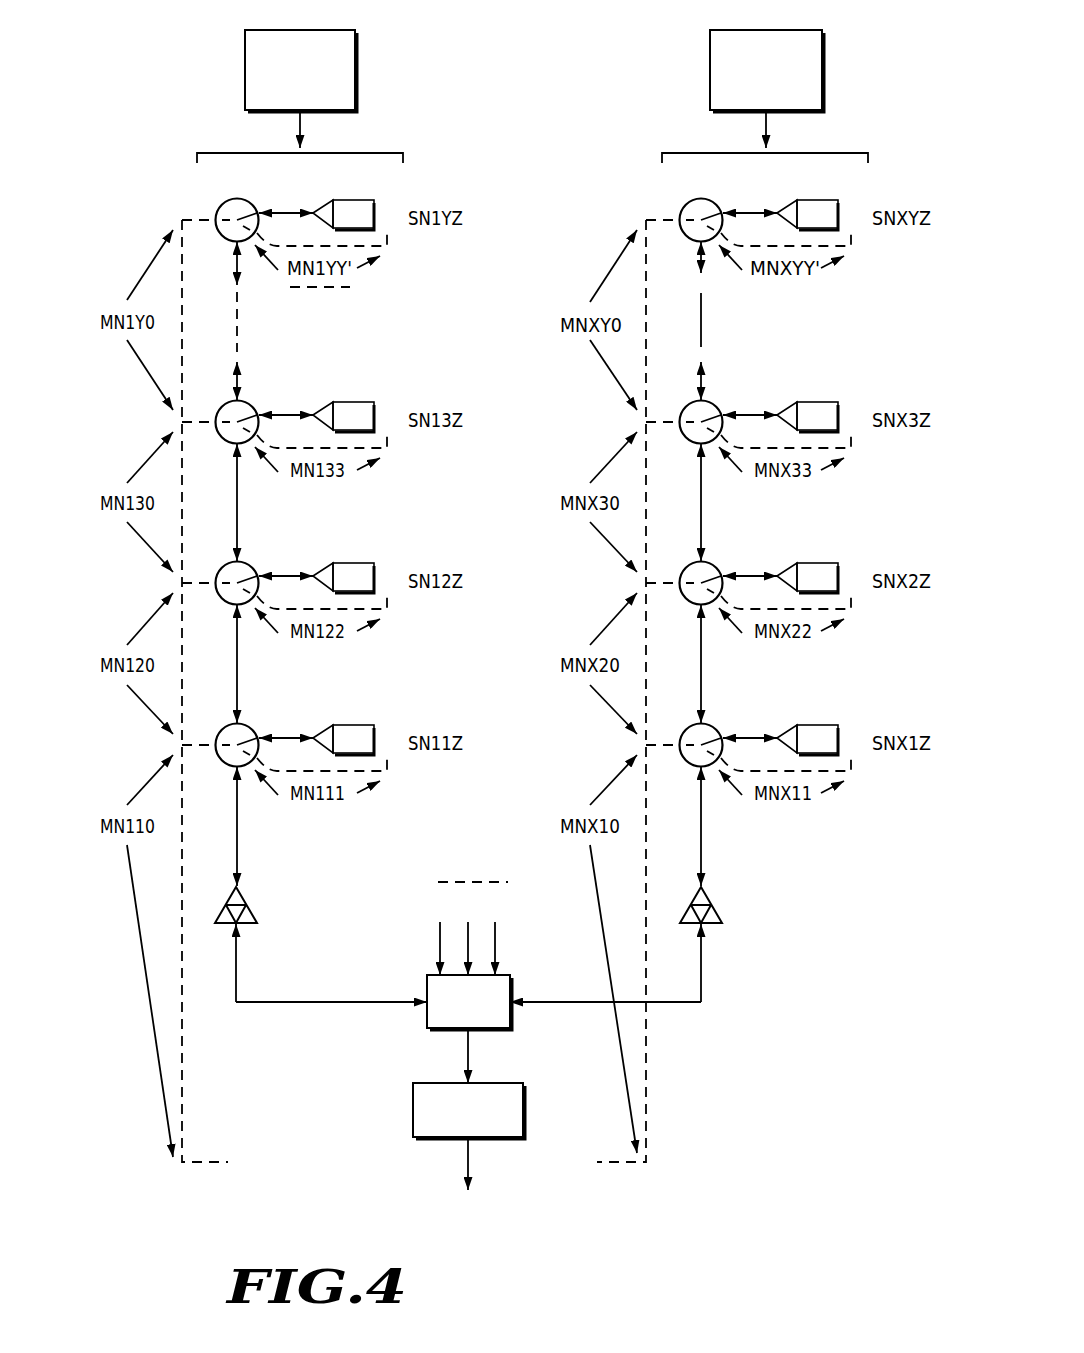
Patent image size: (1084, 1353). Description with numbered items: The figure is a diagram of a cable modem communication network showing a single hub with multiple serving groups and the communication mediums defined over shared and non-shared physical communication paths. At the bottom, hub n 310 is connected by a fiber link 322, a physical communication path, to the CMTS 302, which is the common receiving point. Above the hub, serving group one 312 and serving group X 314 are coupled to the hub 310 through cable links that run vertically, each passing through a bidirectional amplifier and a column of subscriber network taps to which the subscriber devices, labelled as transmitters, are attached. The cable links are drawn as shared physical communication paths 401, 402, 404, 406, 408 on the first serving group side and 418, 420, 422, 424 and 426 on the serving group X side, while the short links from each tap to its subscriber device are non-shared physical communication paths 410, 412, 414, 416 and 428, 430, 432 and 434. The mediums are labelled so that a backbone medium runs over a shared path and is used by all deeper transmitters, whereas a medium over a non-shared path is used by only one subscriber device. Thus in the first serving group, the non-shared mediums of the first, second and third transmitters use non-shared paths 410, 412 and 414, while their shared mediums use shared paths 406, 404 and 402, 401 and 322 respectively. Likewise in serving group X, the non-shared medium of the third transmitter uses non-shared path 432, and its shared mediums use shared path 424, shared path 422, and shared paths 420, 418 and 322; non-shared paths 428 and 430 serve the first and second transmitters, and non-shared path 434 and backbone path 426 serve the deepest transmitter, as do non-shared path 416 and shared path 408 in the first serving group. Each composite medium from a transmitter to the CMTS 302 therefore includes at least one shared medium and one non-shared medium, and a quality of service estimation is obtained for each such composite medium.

The CMTS 302 is at (468, 1182).
The hub n 310 is at (498, 1033).
The serving group 1 312 is at (310, 30).
The serving group X 314 is at (775, 30).
The fiber link 322 is at (498, 1140).
The shared physical communication path 401 is at (330, 1003).
The shared physical communication path 402 is at (238, 818).
The shared physical communication path 404 is at (238, 655).
The shared physical communication path 406 is at (238, 493).
The shared physical communication path 408 is at (238, 318).
The non-shared physical communication path 410 is at (282, 736).
The non-shared physical communication path 412 is at (282, 574).
The non-shared physical communication path 414 is at (282, 413).
The non-shared physical communication path 416 is at (282, 211).
The shared physical communication path 418 is at (702, 962).
The shared physical communication path 420 is at (702, 818).
The shared physical communication path 422 is at (702, 655).
The shared physical communication path 424 is at (702, 493).
The shared physical communication path 426 is at (702, 313).
The non-shared physical communication path 428 is at (746, 736).
The non-shared physical communication path 430 is at (746, 574).
The non-shared physical communication path 432 is at (746, 413).
The non-shared physical communication path 434 is at (746, 211).